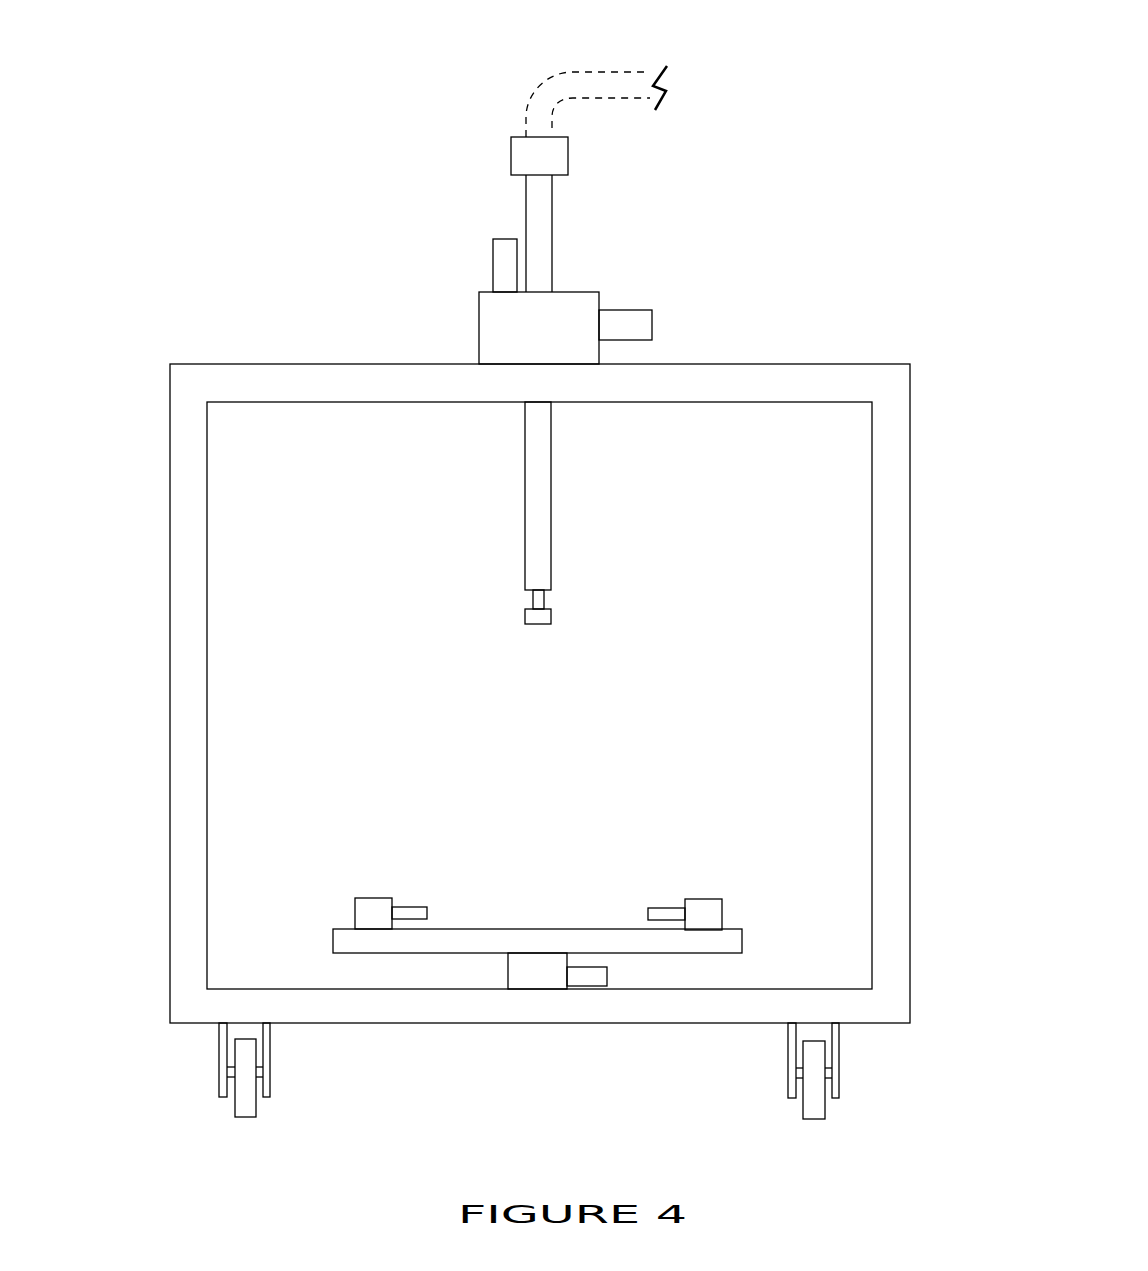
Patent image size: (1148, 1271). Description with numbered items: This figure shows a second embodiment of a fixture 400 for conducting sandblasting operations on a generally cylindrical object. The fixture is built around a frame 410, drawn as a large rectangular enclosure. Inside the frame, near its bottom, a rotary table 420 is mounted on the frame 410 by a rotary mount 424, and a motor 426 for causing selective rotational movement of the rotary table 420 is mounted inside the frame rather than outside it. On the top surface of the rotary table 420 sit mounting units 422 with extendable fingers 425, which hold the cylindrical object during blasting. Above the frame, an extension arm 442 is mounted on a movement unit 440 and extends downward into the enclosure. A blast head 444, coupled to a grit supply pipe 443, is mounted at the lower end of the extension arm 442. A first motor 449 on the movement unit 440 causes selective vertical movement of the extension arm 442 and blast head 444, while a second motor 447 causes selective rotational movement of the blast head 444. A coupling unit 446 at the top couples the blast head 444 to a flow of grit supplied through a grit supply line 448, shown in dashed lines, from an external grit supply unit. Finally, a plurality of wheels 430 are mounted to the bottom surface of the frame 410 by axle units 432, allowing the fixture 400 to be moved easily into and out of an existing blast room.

The fixture 400 is at (313, 317).
The frame 410 is at (186, 478).
The rotary table 420 is at (470, 945).
The mounting units 422 is at (370, 912).
The rotary mount 424 is at (508, 975).
The extendable fingers 425 is at (410, 902).
The motor 426 is at (607, 975).
The wheels 430 is at (246, 1110).
The axle units 432 is at (222, 1068).
The movement unit 440 is at (503, 333).
The extension arm 442 is at (533, 487).
The grit supply pipe 443 is at (535, 600).
The blast head 444 is at (530, 616).
The coupling unit 446 is at (518, 155).
The second motor 447 is at (505, 248).
The grit supply line 448 is at (583, 52).
The first motor 449 is at (625, 320).